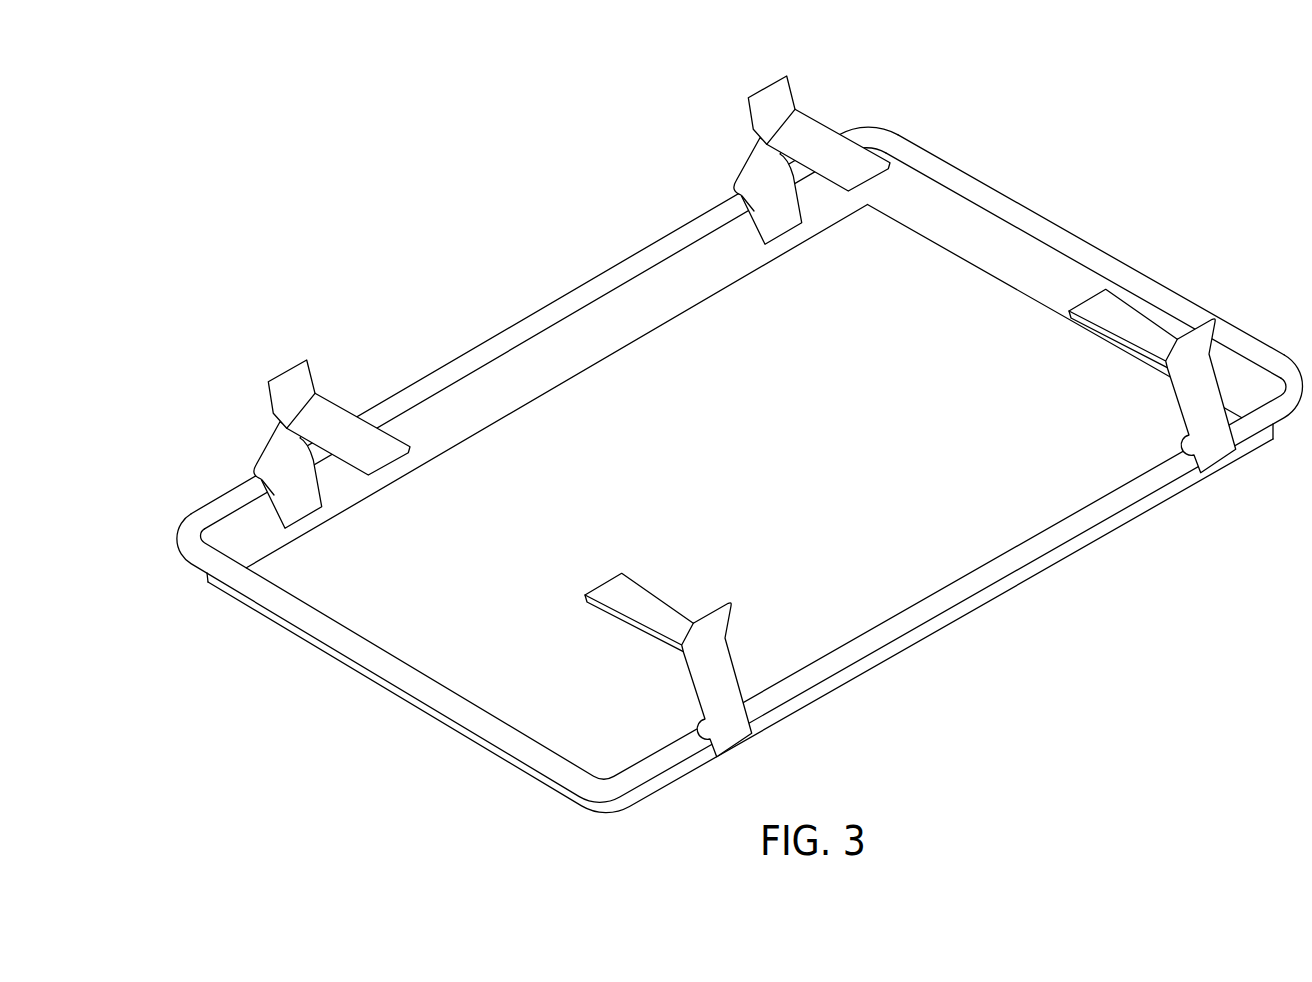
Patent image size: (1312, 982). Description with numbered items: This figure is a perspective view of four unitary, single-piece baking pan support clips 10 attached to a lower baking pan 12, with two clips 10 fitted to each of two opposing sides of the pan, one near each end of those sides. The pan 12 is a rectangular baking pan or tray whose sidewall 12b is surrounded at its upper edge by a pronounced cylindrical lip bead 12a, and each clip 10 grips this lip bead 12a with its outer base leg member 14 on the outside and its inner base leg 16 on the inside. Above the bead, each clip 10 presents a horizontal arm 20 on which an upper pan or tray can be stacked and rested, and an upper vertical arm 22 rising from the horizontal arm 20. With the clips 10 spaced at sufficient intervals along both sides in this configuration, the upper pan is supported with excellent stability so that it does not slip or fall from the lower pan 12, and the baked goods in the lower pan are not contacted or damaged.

The baking pan support clip 10 is at (734, 422).
The baking pan 12 is at (740, 470).
The lip bead 12a is at (577, 290).
The sidewall 12b is at (1045, 255).
The outer base leg member 14 is at (734, 739).
The inner base leg 16 is at (303, 508).
The horizontal arm 20 is at (820, 140).
The upper vertical arm 22 is at (307, 378).